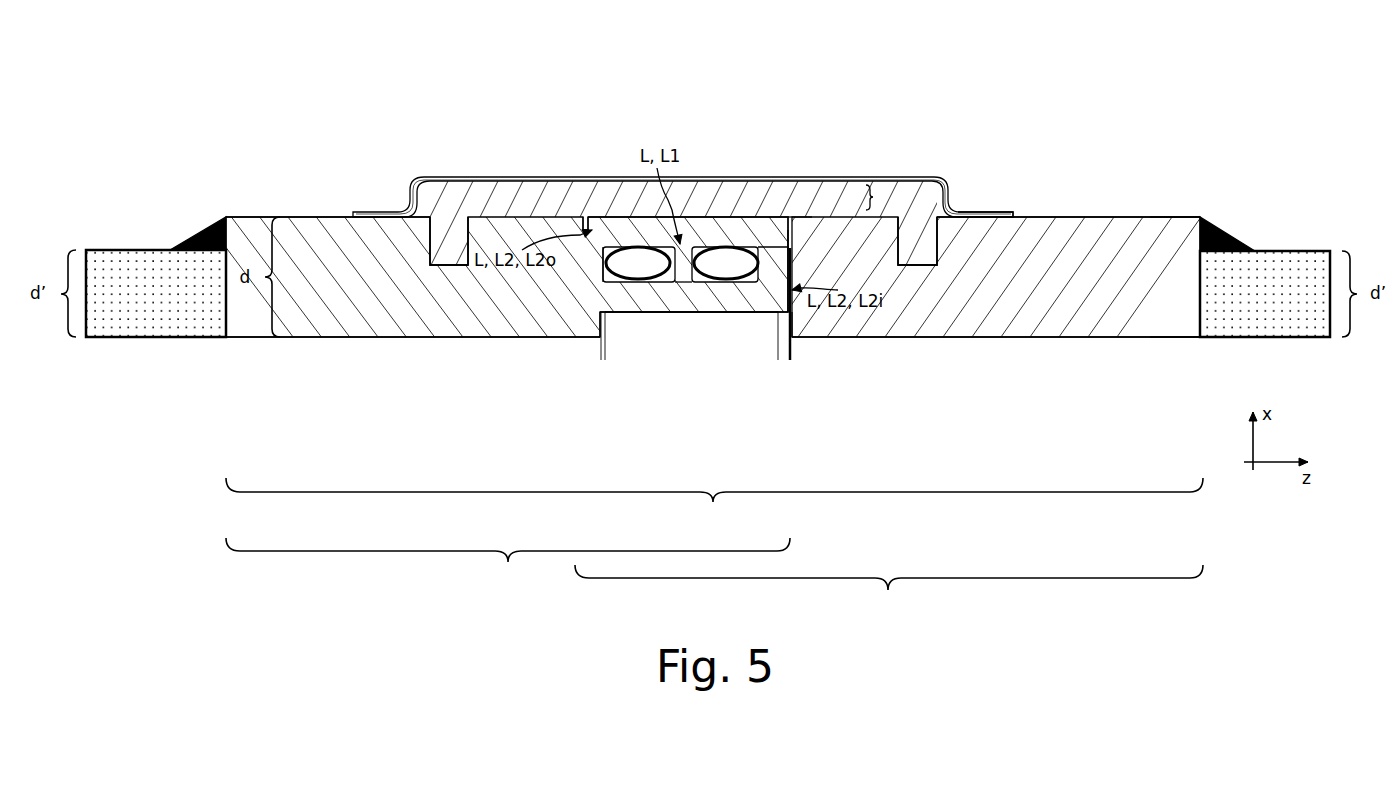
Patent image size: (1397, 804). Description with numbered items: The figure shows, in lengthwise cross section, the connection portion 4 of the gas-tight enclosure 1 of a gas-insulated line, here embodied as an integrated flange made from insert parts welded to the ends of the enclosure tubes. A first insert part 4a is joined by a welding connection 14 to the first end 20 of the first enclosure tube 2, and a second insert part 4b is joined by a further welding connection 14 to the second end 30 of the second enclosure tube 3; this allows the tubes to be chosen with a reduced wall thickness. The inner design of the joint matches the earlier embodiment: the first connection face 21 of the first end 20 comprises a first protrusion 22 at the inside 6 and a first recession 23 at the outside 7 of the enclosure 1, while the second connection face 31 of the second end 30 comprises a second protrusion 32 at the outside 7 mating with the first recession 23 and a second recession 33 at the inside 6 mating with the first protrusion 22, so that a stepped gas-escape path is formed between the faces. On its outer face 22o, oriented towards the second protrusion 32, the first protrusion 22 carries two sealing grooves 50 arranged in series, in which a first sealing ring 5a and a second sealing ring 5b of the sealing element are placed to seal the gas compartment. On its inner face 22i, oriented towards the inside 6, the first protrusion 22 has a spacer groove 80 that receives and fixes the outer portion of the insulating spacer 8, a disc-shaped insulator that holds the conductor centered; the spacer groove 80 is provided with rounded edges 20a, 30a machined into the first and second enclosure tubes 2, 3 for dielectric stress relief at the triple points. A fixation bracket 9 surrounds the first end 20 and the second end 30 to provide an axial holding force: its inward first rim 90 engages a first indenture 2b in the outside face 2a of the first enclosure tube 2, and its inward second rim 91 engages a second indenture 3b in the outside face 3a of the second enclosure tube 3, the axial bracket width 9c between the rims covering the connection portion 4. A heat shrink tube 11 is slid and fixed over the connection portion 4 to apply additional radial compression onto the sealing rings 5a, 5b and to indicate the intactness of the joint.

The enclosure 1 is at (314, 168).
The first enclosure tube 2 is at (300, 323).
The outside face of first enclosure tube 2a is at (249, 217).
The first indenture 2b is at (447, 268).
The second enclosure tube 3 is at (1087, 322).
The outside face of second enclosure tube 3a is at (1105, 217).
The second indenture 3b is at (918, 268).
The connection portion 4 is at (714, 507).
The first insert part 4a is at (508, 569).
The second insert part 4b is at (889, 594).
The first sealing ring 5a is at (639, 250).
The second sealing ring 5b is at (723, 250).
The inside of the enclosure 6 is at (1175, 350).
The outside of the enclosure 7 is at (1175, 203).
The insulating spacer 8 is at (607, 340).
The fixation bracket 9 is at (548, 201).
The bracket width 9c is at (917, 250).
The heat shrink tube 11 is at (994, 211).
The welding connection 14 is at (182, 228).
The first end of first enclosure tube 20 is at (365, 339).
The rounded edge 20a is at (600, 338).
The first connection face 21 is at (778, 250).
The first protrusion 22 is at (630, 297).
The inner face of first protrusion 22i is at (712, 283).
The outer face of first protrusion 22o is at (718, 250).
The first recession 23 is at (598, 232).
The second end of second enclosure tube 30 is at (967, 339).
The rounded edge 30a is at (798, 339).
The second connection face 31 is at (800, 228).
The second protrusion 32 is at (615, 237).
The second recession 33 is at (787, 246).
The sealing groove 50 is at (665, 286).
The spacer groove 80 is at (640, 314).
The first rim of bracket 90 is at (455, 250).
The second rim of bracket 91 is at (935, 200).